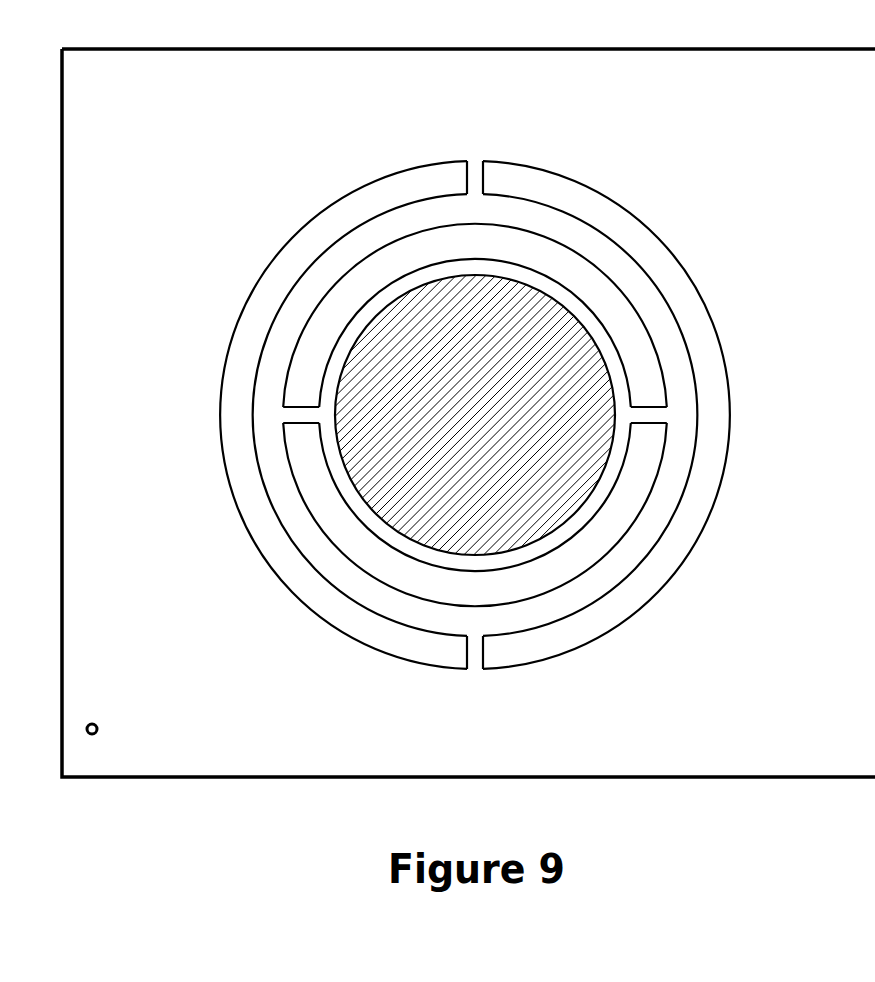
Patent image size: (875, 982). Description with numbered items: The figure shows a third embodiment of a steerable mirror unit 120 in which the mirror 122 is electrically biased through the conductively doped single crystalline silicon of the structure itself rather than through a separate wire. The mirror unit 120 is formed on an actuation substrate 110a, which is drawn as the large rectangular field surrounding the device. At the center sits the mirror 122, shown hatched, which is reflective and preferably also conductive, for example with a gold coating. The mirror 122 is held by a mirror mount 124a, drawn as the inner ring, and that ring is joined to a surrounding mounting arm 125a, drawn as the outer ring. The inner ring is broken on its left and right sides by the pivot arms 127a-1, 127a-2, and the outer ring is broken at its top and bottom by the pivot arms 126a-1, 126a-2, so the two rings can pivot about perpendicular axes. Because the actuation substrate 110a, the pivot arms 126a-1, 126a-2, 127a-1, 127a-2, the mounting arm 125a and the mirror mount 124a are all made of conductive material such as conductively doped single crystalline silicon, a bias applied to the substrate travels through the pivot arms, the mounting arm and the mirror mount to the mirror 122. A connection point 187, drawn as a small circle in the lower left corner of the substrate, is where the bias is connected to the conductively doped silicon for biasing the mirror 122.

The actuation substrate 110a is at (468, 413).
The mirror unit 120 is at (459, 413).
The mirror 122 is at (535, 332).
The mirror mount 124a is at (459, 415).
The mounting arm 125a is at (503, 413).
The pivot arm 126a-1 is at (473, 176).
The pivot arm 126a-2 is at (474, 648).
The pivot arm 127a-1 is at (653, 410).
The pivot arm 127a-2 is at (294, 424).
The connection point 187 is at (100, 722).